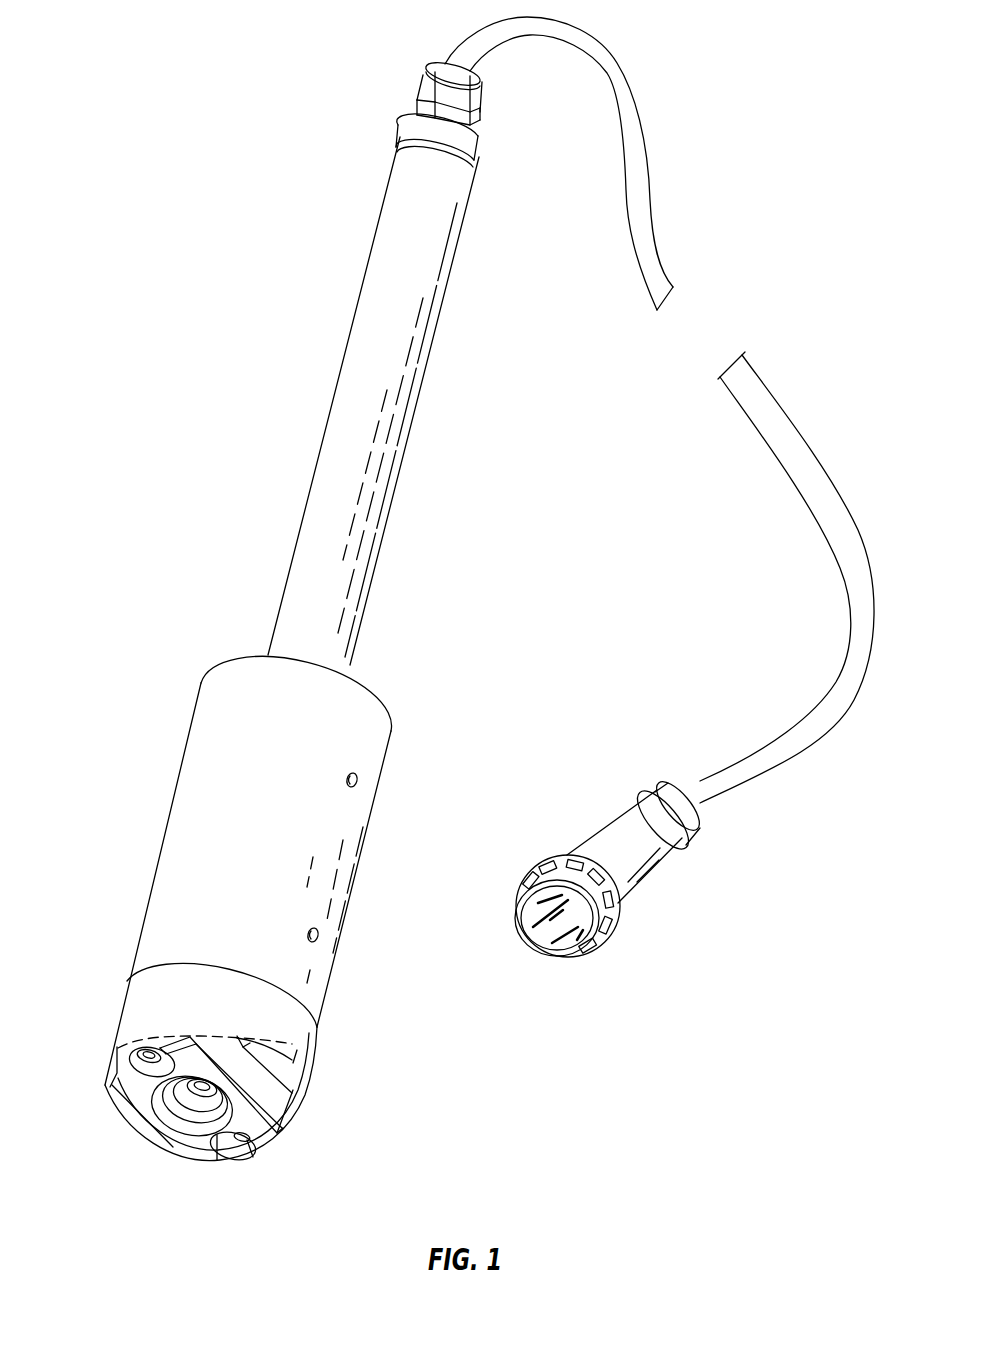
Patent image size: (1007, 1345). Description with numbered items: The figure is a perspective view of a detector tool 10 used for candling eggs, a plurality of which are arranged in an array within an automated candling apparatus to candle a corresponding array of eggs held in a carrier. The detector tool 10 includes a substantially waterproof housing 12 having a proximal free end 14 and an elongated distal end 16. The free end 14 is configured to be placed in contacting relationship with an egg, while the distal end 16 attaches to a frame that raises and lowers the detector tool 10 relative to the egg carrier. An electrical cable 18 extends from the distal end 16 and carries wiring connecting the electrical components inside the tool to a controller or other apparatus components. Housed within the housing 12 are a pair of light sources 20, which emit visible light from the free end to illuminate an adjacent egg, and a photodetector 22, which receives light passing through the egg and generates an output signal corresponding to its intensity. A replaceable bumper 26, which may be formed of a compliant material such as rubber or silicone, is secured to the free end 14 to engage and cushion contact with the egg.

The detector tool 10 is at (272, 295).
The housing 12 is at (167, 818).
The proximal free end 14 is at (263, 1140).
The elongated distal end 16 is at (408, 177).
The electrical cable 18 is at (630, 90).
The light sources 20 is at (112, 1107).
The photodetector 22 is at (163, 1150).
The replaceable bumper 26 is at (262, 1092).